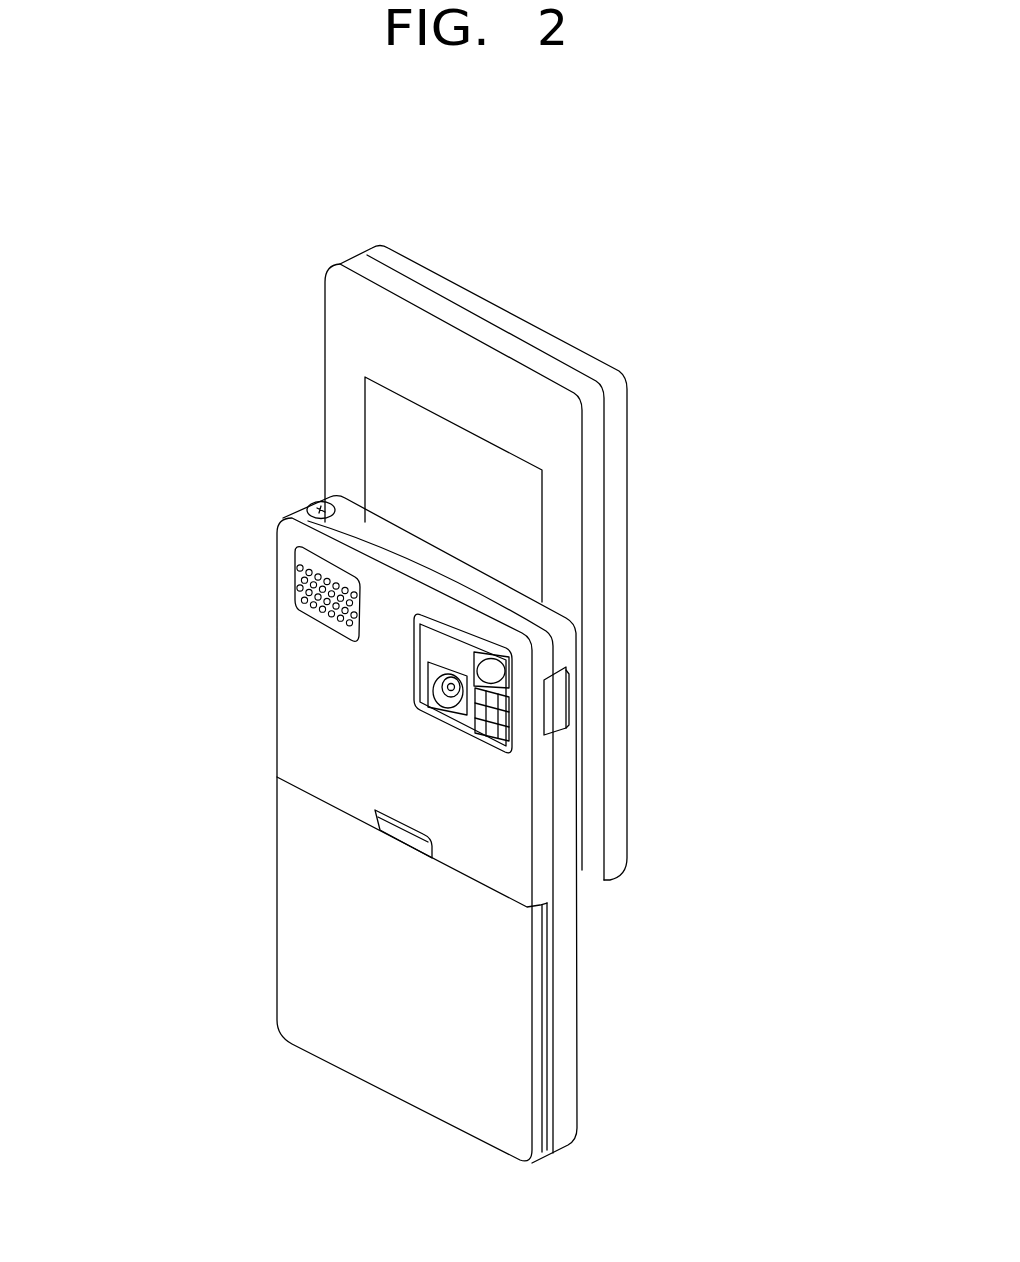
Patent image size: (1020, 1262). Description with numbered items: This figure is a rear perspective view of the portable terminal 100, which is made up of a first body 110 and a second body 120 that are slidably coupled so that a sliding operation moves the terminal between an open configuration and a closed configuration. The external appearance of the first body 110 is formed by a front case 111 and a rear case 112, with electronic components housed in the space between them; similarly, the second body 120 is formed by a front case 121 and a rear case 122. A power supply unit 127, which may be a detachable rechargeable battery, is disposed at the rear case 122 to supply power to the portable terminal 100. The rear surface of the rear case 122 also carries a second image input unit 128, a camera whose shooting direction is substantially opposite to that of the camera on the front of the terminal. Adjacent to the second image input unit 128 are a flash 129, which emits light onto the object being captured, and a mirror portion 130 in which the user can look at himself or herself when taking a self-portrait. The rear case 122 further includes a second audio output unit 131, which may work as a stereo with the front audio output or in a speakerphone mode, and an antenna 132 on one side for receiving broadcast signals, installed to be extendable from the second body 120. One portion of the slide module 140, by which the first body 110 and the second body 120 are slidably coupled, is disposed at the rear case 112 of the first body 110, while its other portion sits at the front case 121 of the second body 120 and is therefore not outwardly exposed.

The portable terminal 100 is at (597, 285).
The first body 110 is at (291, 384).
The front case 111 is at (380, 265).
The rear case 112 is at (356, 265).
The second body 120 is at (259, 690).
The front case 121 is at (568, 928).
The rear case 122 is at (543, 870).
The power supply unit 127 is at (295, 862).
The second image input unit 128 is at (452, 688).
The flash 129 is at (492, 718).
The mirror portion 130 is at (492, 668).
The second audio output unit 131 is at (300, 592).
The antenna 132 is at (310, 506).
The slide module 140 is at (364, 457).